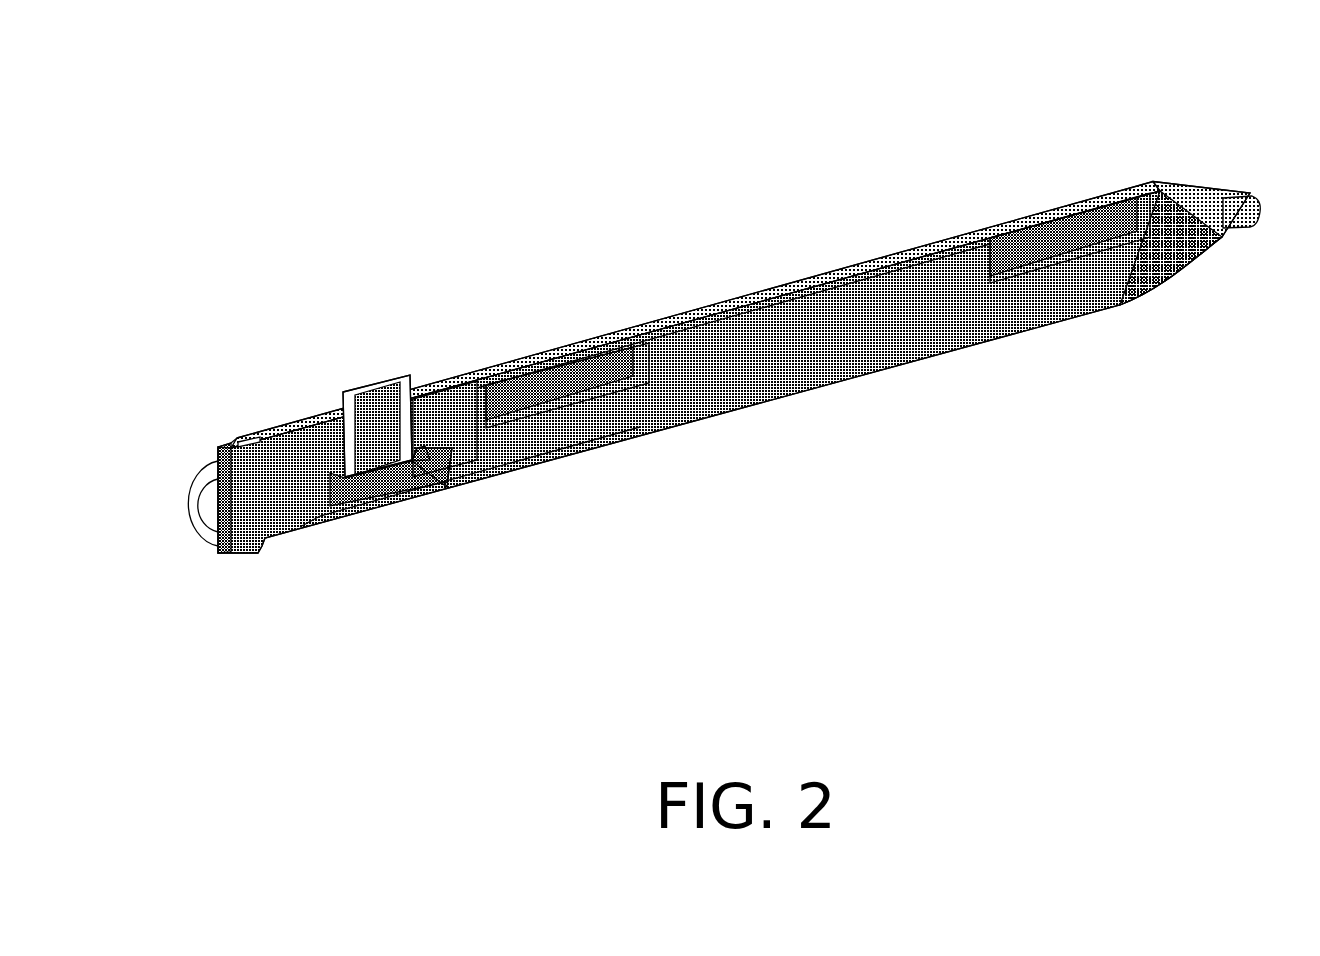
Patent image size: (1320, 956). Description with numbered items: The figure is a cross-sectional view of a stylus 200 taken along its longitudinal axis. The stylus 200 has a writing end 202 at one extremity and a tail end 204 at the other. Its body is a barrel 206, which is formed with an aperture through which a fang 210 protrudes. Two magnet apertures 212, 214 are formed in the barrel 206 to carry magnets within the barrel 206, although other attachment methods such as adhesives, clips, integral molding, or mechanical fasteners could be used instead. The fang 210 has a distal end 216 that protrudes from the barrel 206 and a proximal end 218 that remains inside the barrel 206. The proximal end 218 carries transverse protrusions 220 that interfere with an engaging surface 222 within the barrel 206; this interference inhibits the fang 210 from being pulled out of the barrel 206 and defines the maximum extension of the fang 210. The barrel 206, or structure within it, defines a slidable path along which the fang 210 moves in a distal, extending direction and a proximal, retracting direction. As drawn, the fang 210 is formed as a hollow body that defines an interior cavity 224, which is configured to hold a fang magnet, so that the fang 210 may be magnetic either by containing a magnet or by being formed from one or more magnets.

The stylus 200 is at (663, 135).
The writing end 202 is at (1230, 163).
The tail end 204 is at (213, 412).
The barrel 206 is at (735, 300).
The fang 210 is at (383, 376).
The magnet aperture 212 is at (570, 378).
The magnet aperture 214 is at (1062, 253).
The distal end 216 is at (362, 372).
The proximal end 218 is at (373, 470).
The transverse protrusions 220 is at (419, 455).
The engaging surface 222 is at (427, 450).
The interior cavity 224 is at (368, 417).